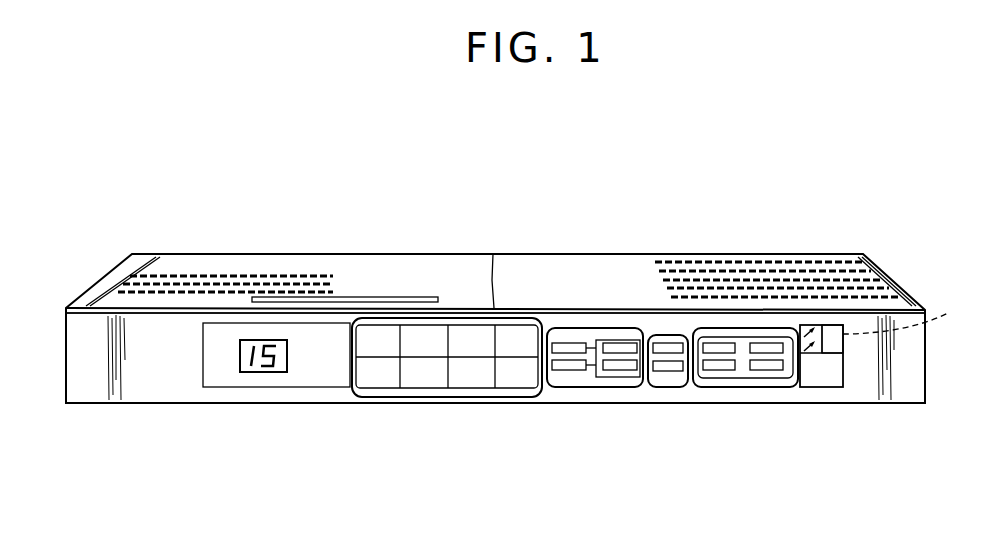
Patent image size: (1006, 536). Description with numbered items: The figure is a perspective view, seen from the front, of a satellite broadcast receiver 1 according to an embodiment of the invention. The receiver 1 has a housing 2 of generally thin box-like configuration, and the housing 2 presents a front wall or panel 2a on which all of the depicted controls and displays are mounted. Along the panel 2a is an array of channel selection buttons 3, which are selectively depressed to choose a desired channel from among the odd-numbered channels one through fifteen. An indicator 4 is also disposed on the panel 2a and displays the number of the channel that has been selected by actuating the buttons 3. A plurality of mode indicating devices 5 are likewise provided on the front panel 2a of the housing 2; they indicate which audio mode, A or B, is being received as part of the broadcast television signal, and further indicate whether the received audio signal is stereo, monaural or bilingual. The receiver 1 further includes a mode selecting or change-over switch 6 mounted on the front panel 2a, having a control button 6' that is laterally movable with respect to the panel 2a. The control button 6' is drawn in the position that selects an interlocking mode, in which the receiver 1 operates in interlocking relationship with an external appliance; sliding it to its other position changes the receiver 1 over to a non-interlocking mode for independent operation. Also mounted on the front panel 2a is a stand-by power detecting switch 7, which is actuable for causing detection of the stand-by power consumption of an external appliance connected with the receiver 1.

The satellite broadcast receiver 1 is at (913, 201).
The housing 2 is at (921, 291).
The front wall or panel 2a is at (918, 368).
The channel selection buttons 3 is at (390, 328).
The indicator 4 is at (265, 338).
The mode indicating devices 5 is at (572, 335).
The mode selecting or change-over switch 6 is at (821, 265).
The control button 6' is at (800, 265).
The stand-by power detecting switch 7 is at (832, 363).